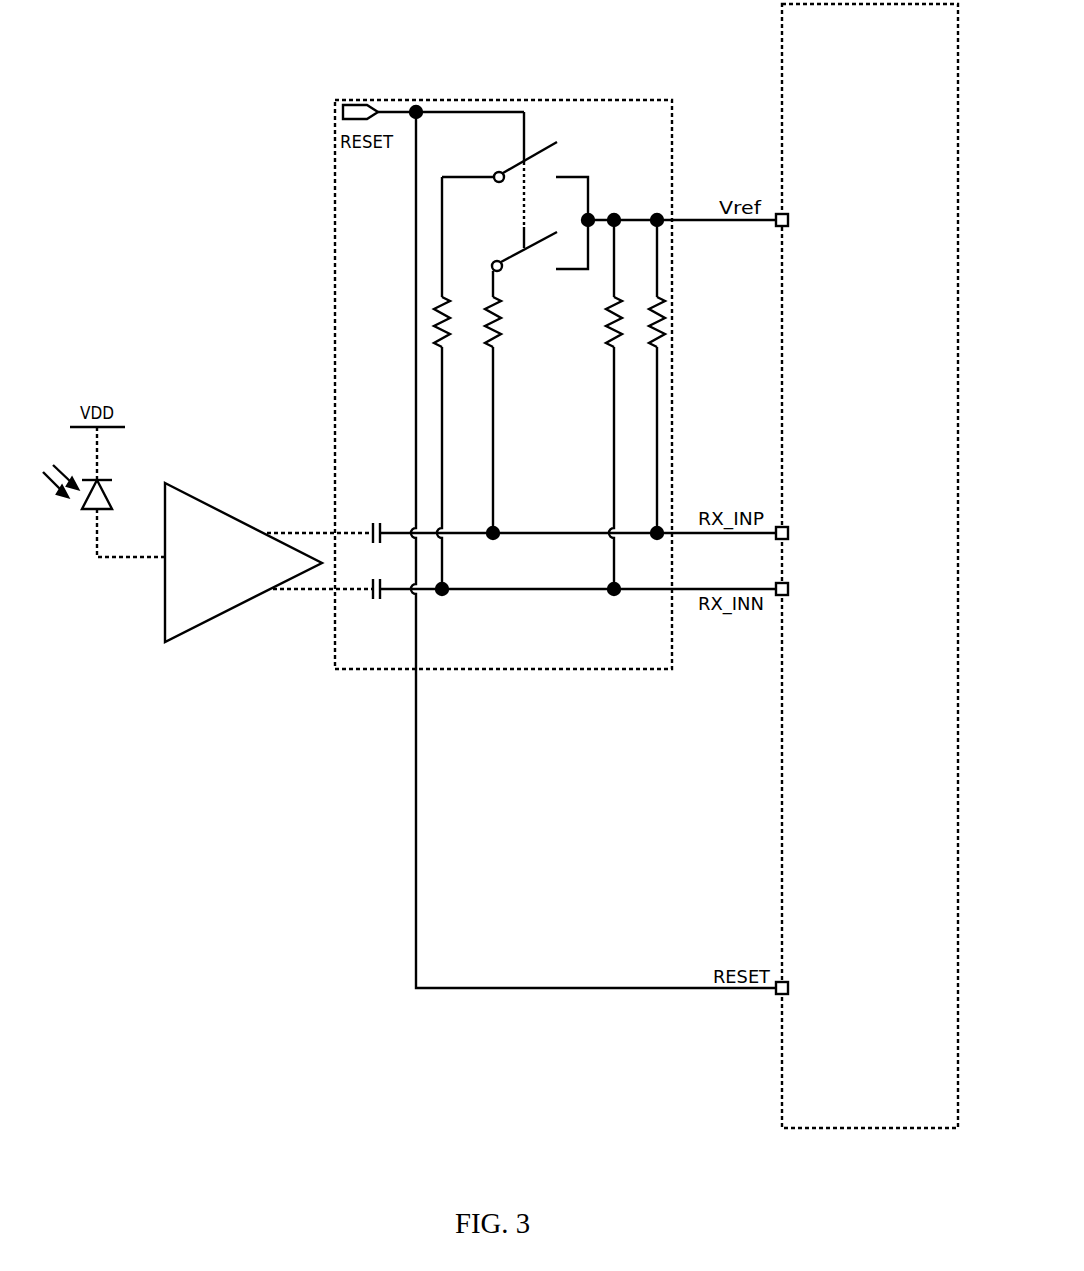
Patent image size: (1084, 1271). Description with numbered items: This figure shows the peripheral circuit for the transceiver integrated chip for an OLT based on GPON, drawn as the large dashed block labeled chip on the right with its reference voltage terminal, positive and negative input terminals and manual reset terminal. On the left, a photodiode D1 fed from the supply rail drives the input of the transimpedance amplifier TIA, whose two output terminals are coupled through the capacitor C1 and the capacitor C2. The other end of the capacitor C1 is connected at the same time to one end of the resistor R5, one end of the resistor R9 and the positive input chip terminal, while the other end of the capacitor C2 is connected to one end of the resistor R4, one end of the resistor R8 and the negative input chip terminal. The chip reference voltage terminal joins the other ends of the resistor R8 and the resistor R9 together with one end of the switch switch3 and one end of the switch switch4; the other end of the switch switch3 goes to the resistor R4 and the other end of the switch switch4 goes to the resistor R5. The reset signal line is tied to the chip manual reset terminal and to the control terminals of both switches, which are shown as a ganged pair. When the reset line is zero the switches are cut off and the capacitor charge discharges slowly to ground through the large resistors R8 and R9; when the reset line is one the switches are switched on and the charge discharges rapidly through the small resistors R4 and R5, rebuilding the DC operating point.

The photodiode D1 is at (104, 492).
The transimpedance amplifier TIA is at (243, 562).
The capacitor C1 is at (327, 522).
The capacitor C2 is at (330, 603).
The resistor R4 is at (459, 386).
The resistor R5 is at (510, 418).
The resistor R8 is at (598, 404).
The resistor R9 is at (675, 376).
The switch switch3 is at (497, 162).
The switch switch4 is at (538, 264).
The transceiver integrated chip for an OLT based on GPON chip is at (870, 566).